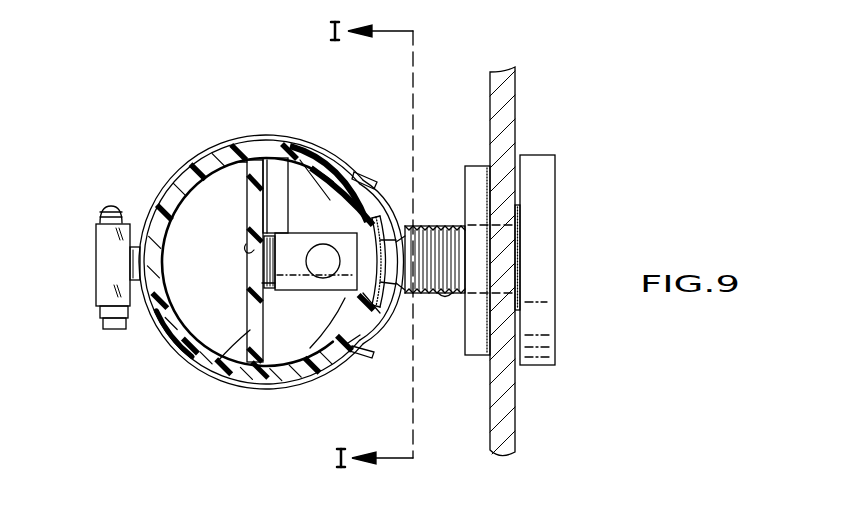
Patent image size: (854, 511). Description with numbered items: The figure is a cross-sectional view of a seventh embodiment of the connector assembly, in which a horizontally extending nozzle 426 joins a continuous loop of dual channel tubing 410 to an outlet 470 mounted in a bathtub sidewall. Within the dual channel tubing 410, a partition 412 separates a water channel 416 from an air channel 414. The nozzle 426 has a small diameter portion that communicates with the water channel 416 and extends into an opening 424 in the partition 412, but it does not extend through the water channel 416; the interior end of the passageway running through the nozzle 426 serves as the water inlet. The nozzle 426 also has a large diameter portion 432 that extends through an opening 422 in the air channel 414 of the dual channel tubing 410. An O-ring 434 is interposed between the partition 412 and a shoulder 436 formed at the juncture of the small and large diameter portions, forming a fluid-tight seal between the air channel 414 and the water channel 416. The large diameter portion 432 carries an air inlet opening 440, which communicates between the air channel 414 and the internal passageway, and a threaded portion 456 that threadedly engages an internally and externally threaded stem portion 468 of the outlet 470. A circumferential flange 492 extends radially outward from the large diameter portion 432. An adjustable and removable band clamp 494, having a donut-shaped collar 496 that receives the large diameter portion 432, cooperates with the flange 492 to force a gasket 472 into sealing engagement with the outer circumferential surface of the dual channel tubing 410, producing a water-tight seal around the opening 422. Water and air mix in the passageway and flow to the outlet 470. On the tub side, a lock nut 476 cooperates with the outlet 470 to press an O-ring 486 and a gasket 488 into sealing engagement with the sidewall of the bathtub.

The dual channel tubing 410 is at (195, 352).
The partition 412 is at (247, 340).
The air channel 414 is at (275, 178).
The water channel 416 is at (188, 212).
The opening 422 is at (352, 244).
The opening 424 is at (246, 242).
The nozzle 426 is at (281, 225).
The large diameter portion 432 is at (340, 300).
The O-ring 434 is at (262, 283).
The shoulder 436 is at (264, 262).
The air inlet opening 440 is at (323, 272).
The threaded portion 456 is at (417, 226).
The stem portion 468 is at (440, 296).
The outlet 470 is at (540, 197).
The gasket 472 is at (376, 215).
The lock nut 476 is at (478, 352).
The O-ring 486 is at (519, 236).
The gasket 488 is at (488, 165).
The circumferential flange 492 is at (366, 352).
The band clamp 494 is at (85, 220).
The collar 496 is at (392, 330).